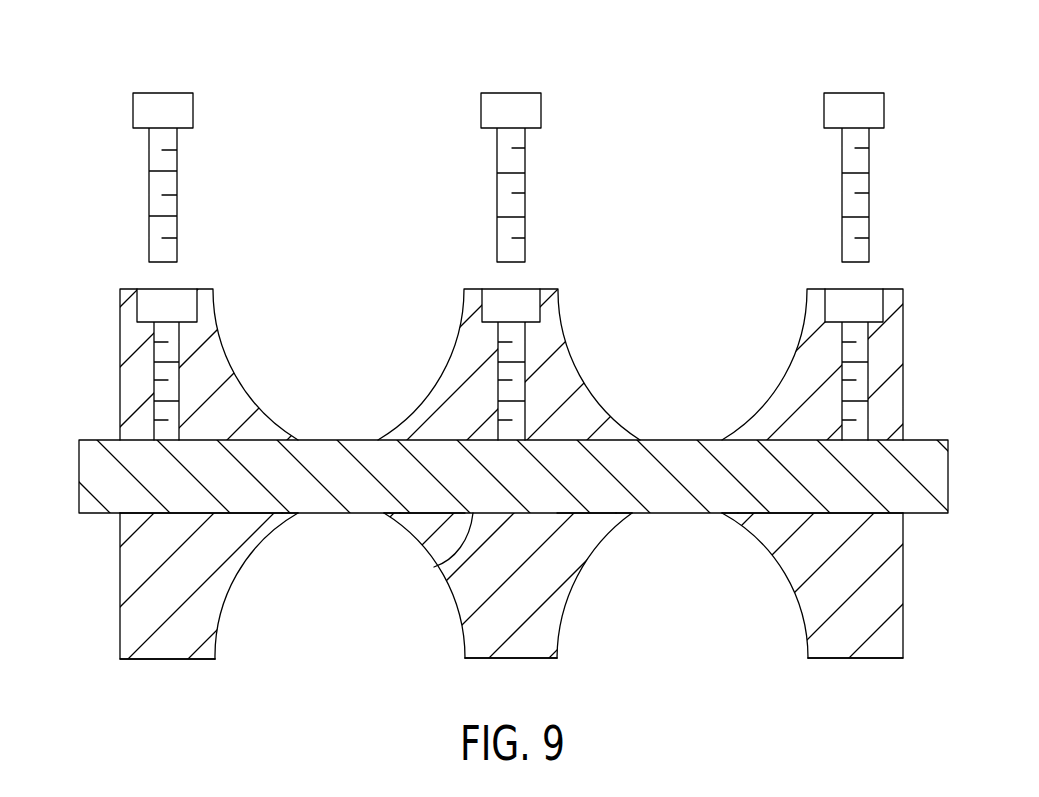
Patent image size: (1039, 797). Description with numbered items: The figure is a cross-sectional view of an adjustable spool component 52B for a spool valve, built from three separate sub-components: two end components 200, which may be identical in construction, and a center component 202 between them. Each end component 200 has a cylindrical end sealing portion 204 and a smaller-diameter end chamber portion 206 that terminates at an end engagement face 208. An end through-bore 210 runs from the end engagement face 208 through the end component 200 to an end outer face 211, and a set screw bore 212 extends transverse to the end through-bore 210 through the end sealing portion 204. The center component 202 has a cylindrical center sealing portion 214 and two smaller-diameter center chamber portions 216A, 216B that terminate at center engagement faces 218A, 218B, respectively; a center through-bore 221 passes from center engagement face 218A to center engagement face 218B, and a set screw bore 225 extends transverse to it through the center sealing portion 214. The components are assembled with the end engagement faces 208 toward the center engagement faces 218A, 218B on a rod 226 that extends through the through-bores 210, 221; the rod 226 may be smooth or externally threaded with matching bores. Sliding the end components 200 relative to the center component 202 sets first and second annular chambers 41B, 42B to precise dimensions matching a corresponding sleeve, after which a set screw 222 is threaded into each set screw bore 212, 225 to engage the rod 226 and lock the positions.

The adjustable spool component 52B is at (737, 65).
The set screw 222 is at (194, 110).
The end outer face 211 is at (120, 367).
The set screw bore 212 is at (182, 382).
The set screw bore 225 is at (527, 382).
The rod 226 is at (943, 480).
The end through-bore 210 is at (160, 516).
The end engagement face 208 is at (298, 514).
The end chamber portion 206 is at (240, 574).
The end component 200 is at (135, 637).
The end sealing portion 204 is at (183, 660).
The center component 202 is at (490, 635).
The center sealing portion 214 is at (535, 659).
The center chamber portion 216A is at (462, 623).
The center chamber portion 216B is at (585, 575).
The center engagement face 218A is at (383, 514).
The center engagement face 218B is at (643, 515).
The center through-bore 221 is at (435, 566).
The first annular chamber 41B is at (353, 658).
The second annular chamber 42B is at (692, 640).